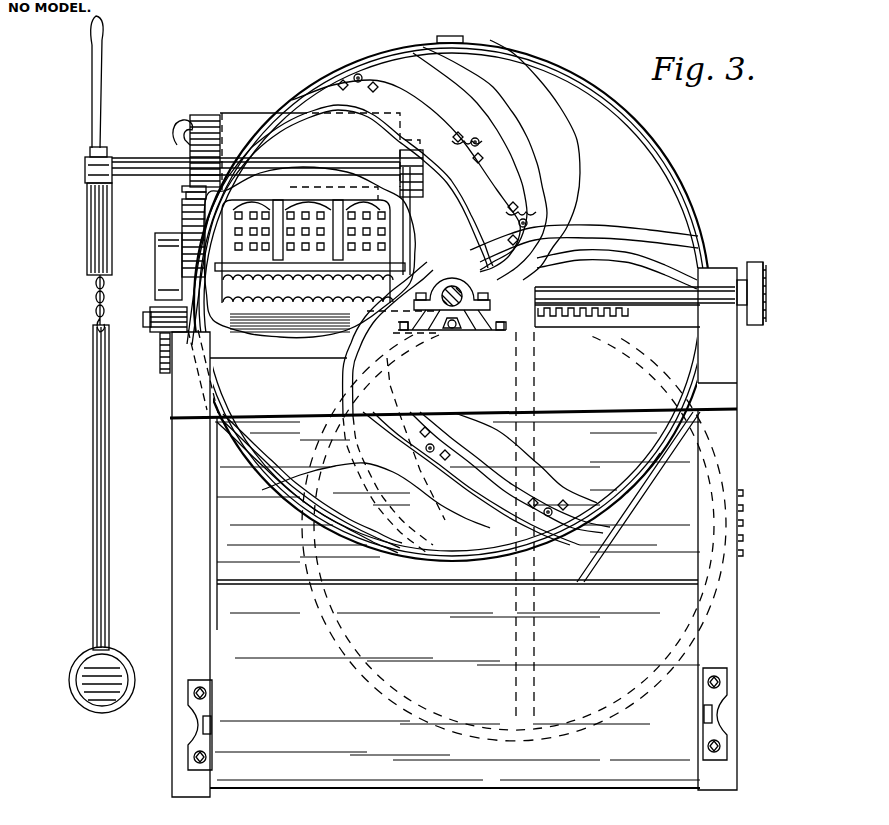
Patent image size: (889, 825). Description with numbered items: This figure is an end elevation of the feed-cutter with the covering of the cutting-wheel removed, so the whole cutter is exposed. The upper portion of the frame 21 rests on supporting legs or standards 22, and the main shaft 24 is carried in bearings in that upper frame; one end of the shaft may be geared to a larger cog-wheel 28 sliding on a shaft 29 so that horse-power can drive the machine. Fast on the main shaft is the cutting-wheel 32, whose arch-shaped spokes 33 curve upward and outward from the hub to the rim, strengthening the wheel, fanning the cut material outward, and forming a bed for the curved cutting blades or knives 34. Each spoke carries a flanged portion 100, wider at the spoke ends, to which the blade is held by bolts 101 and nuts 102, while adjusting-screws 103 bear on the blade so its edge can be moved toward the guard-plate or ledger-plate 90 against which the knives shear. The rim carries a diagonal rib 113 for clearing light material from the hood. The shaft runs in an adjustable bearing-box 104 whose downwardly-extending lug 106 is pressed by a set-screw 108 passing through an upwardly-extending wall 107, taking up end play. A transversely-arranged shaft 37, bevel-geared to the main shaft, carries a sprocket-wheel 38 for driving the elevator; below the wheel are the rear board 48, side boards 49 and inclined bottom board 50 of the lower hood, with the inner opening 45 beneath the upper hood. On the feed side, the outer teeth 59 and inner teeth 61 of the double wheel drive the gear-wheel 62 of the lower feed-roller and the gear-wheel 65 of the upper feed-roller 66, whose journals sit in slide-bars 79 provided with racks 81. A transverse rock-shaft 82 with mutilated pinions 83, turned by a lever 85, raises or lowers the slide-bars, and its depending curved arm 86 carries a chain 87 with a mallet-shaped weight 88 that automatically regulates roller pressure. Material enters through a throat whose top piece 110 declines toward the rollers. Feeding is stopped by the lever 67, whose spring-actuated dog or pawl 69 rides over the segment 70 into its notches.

The upper portion of the frame 21 is at (737, 372).
The supporting legs or standards 22 is at (172, 540).
The main shaft 24 is at (472, 328).
The larger cog-wheel 28 is at (744, 525).
The shaft 29 is at (514, 538).
The cutting-wheel 32 is at (665, 157).
The arch-shaped spokes 33 is at (473, 95).
The curved cutting blades or knives 34 is at (470, 200).
The transversely-arranged shaft 37 is at (652, 298).
The sprocket-wheel 38 is at (762, 260).
The inner opening 45 is at (297, 290).
The rear board 48 is at (677, 508).
The side boards 49 is at (217, 520).
The inclined bottom board 50 is at (455, 684).
The outer teeth of double wheel 59 is at (165, 335).
The inner teeth of double wheel 61 is at (150, 318).
The gear-wheel 62 is at (185, 345).
The gear-wheel 65 is at (182, 215).
The upper feed-roller 66 is at (365, 222).
The lever 67 is at (190, 120).
The spring-actuated dog or pawl 69 is at (182, 189).
The segment 70 is at (186, 196).
The slide-bars 79 is at (410, 228).
The racks 81 is at (430, 183).
The transverse rock-shaft 82 is at (128, 158).
The mutilated pinions 83 is at (240, 142).
The lever 85 is at (90, 82).
The depending curved arm 86 is at (86, 235).
The chain 87 is at (96, 285).
The weight 88 is at (70, 675).
The guard-plate or ledger-plate 90 is at (260, 307).
The flanged portion 100 is at (413, 102).
The bolts 101 is at (478, 143).
The nuts 102 is at (460, 132).
The adjusting-screws 103 is at (486, 160).
The adjustable bearing-box 104 is at (454, 286).
The downwardly-extending lug 106 is at (466, 330).
The upwardly-extending wall 107 is at (432, 320).
The set-screw 108 is at (452, 330).
The top piece 110 is at (256, 124).
The diagonal rib 113 is at (450, 36).